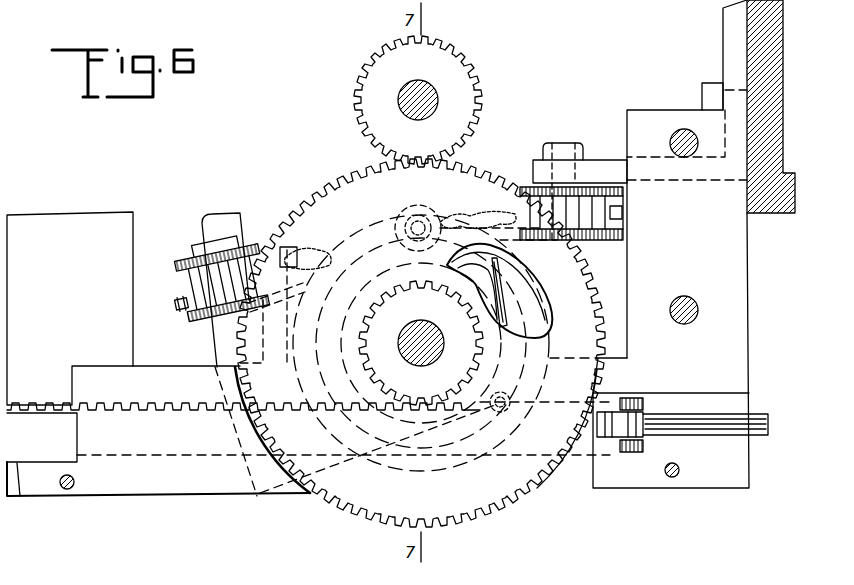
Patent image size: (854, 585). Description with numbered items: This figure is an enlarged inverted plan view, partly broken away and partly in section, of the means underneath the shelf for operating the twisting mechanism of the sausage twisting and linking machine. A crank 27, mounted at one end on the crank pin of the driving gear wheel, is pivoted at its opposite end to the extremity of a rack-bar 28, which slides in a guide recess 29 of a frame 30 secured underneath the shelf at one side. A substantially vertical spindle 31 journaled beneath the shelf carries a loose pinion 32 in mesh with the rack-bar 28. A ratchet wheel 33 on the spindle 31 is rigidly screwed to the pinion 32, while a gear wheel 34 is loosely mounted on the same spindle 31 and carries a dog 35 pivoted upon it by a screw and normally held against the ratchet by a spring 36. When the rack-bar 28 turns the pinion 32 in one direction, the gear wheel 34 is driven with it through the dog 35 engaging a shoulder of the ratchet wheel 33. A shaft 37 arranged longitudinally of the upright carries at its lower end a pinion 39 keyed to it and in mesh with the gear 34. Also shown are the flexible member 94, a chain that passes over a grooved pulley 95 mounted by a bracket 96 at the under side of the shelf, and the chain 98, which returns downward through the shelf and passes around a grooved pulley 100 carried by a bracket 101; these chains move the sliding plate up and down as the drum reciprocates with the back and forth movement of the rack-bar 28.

The crank 27 is at (727, 432).
The rack-bar 28 is at (52, 447).
The guide recess 29 is at (19, 465).
The frame 30 is at (730, 350).
The spindle 31 is at (422, 355).
The pinion 32 is at (362, 372).
The ratchet wheel 33 is at (500, 317).
The gear wheel 34 is at (479, 494).
The dog 35 is at (477, 267).
The spring 36 is at (515, 297).
The shaft 37 is at (424, 90).
The pinion 39 is at (470, 80).
The flexible member 94 is at (185, 297).
The grooved pulley 95 is at (210, 270).
The bracket 96 is at (222, 345).
The chain 98 is at (470, 212).
The grooved pulley 100 is at (583, 217).
The bracket 101 is at (614, 167).